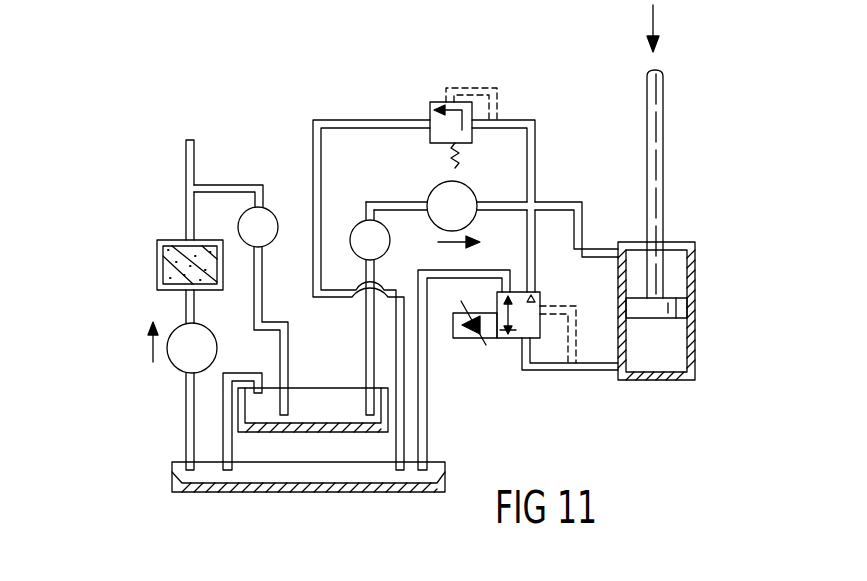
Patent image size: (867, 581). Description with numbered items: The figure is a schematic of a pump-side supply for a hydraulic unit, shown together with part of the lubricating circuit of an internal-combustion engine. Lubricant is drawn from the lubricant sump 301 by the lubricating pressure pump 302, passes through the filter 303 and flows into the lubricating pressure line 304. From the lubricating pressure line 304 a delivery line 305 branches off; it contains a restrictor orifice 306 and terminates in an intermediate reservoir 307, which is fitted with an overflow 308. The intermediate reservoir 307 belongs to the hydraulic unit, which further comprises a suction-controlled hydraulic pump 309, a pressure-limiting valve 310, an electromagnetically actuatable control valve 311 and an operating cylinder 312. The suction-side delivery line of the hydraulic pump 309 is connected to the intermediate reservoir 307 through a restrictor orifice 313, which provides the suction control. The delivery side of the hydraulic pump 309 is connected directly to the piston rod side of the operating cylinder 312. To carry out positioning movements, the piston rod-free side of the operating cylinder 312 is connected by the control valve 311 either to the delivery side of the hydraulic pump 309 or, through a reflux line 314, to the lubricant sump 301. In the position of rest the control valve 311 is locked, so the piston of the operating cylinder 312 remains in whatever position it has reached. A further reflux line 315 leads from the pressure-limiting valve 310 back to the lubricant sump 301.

The lubricant sump 301 is at (327, 480).
The lubricating pressure pump 302 is at (180, 365).
The filter 303 is at (160, 264).
The lubricating pressure line 304 is at (185, 170).
The delivery line 305 is at (223, 185).
The restrictor orifice 306 is at (270, 205).
The intermediate reservoir 307 is at (338, 400).
The overflow 308 is at (250, 362).
The suction-controlled hydraulic pump 309 is at (430, 186).
The pressure-limiting valve 310 is at (432, 103).
The control valve 311 is at (543, 300).
The operating cylinder 312 is at (658, 380).
The restrictor orifice 313 is at (362, 221).
The reflux line 314 is at (427, 410).
The reflux line 315 is at (405, 368).